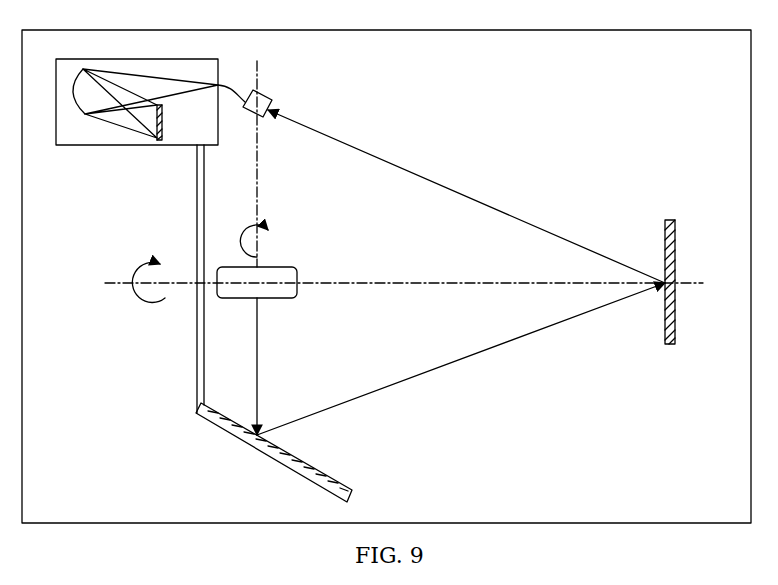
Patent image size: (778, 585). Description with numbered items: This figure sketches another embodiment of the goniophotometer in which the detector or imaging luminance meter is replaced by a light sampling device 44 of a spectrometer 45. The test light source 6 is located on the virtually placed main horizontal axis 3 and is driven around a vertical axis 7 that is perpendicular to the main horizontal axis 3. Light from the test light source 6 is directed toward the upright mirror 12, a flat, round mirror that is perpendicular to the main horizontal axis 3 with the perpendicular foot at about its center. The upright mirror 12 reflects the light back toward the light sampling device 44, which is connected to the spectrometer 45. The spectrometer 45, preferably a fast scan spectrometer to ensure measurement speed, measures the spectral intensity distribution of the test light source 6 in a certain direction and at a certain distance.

The spectrometer 45 is at (115, 146).
The light sampling device 44 is at (262, 93).
The main horizontal axis 3 is at (388, 283).
The test light source 6 is at (270, 298).
The vertical axis 7 is at (323, 475).
The upright mirror 12 is at (675, 262).